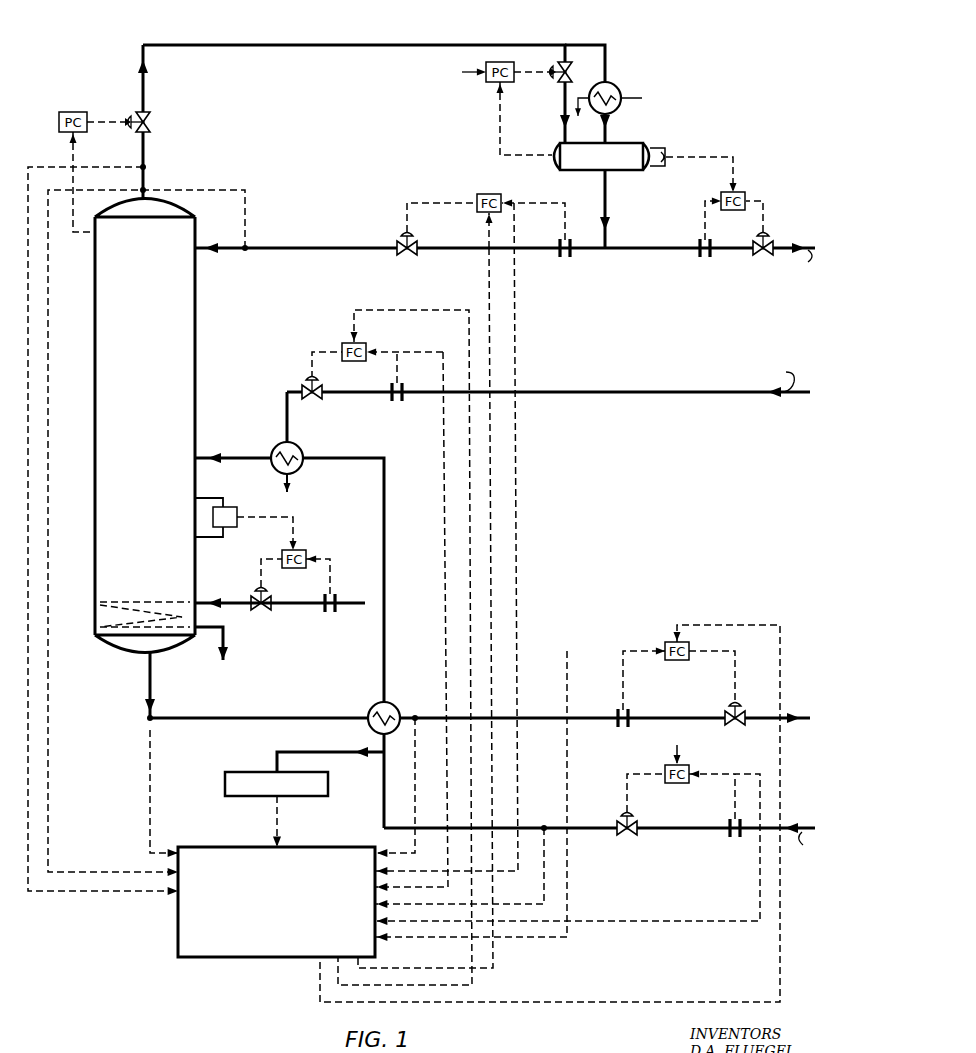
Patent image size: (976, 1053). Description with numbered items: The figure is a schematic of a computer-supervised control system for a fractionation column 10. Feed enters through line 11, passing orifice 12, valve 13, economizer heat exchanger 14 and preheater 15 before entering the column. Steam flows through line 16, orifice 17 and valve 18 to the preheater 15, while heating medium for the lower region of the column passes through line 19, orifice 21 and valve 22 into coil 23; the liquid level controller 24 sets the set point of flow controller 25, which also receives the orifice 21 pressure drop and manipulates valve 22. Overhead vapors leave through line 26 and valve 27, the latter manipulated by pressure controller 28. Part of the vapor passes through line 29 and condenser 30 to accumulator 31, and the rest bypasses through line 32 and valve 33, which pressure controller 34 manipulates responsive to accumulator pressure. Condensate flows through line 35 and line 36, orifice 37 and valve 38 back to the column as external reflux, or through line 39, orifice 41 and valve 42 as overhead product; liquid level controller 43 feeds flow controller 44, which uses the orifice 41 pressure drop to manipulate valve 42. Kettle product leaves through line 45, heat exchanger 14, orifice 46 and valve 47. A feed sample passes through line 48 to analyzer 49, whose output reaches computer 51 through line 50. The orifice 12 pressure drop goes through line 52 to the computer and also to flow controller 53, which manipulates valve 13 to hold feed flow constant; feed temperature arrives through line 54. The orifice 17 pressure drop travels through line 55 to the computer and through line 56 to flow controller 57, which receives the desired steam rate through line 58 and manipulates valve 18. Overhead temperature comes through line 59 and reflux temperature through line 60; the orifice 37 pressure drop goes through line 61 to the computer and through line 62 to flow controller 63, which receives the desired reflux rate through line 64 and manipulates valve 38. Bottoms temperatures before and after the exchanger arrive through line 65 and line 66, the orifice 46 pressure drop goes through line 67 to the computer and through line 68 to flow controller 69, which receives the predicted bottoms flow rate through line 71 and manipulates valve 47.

The fractionation column 10 is at (95, 437).
The line 11 is at (795, 828).
The orifice 12 is at (732, 836).
The valve 13 is at (625, 836).
The economizer heat exchanger 14 is at (372, 708).
The preheater 15 is at (275, 450).
The line 16 is at (703, 393).
The orifice 17 is at (395, 395).
The valve 18 is at (318, 394).
The line 19 is at (346, 603).
The orifice 21 is at (325, 600).
The valve 22 is at (254, 595).
The coil 23 is at (160, 598).
The liquid level controller 24 is at (233, 527).
The flow controller 25 is at (307, 554).
The line 26 is at (145, 155).
The valve 27 is at (154, 126).
The pressure controller 28 is at (59, 123).
The line 29 is at (605, 45).
The condenser 30 is at (616, 84).
The accumulator 31 is at (635, 143).
The line 32 is at (568, 44).
The valve 33 is at (557, 84).
The pressure controller 34 is at (488, 85).
The line 35 is at (604, 200).
The line 36 is at (585, 248).
The orifice 37 is at (560, 240).
The valve 38 is at (398, 238).
The line 39 is at (682, 248).
The orifice 41 is at (706, 240).
The valve 42 is at (772, 230).
The liquid level controller 43 is at (668, 156).
The flow controller 44 is at (745, 192).
The line 45 is at (148, 714).
The orifice 46 is at (618, 724).
The valve 47 is at (740, 706).
The line 48 is at (330, 752).
The analyzer 49 is at (247, 772).
The line 50 is at (272, 816).
The computer 51 is at (333, 847).
The line 52 is at (760, 880).
The flow controller 53 is at (675, 783).
The line 54 is at (544, 866).
The line 55 is at (446, 468).
The line 56 is at (372, 350).
The flow controller 57 is at (342, 348).
The line 58 is at (422, 310).
The line 59 is at (30, 296).
The line 60 is at (49, 345).
The line 61 is at (516, 326).
The line 62 is at (503, 196).
The flow controller 63 is at (484, 216).
The line 64 is at (490, 306).
The line 65 is at (150, 756).
The line 66 is at (415, 770).
The line 67 is at (566, 786).
The line 68 is at (632, 660).
The flow controller 69 is at (686, 660).
The line 71 is at (780, 975).